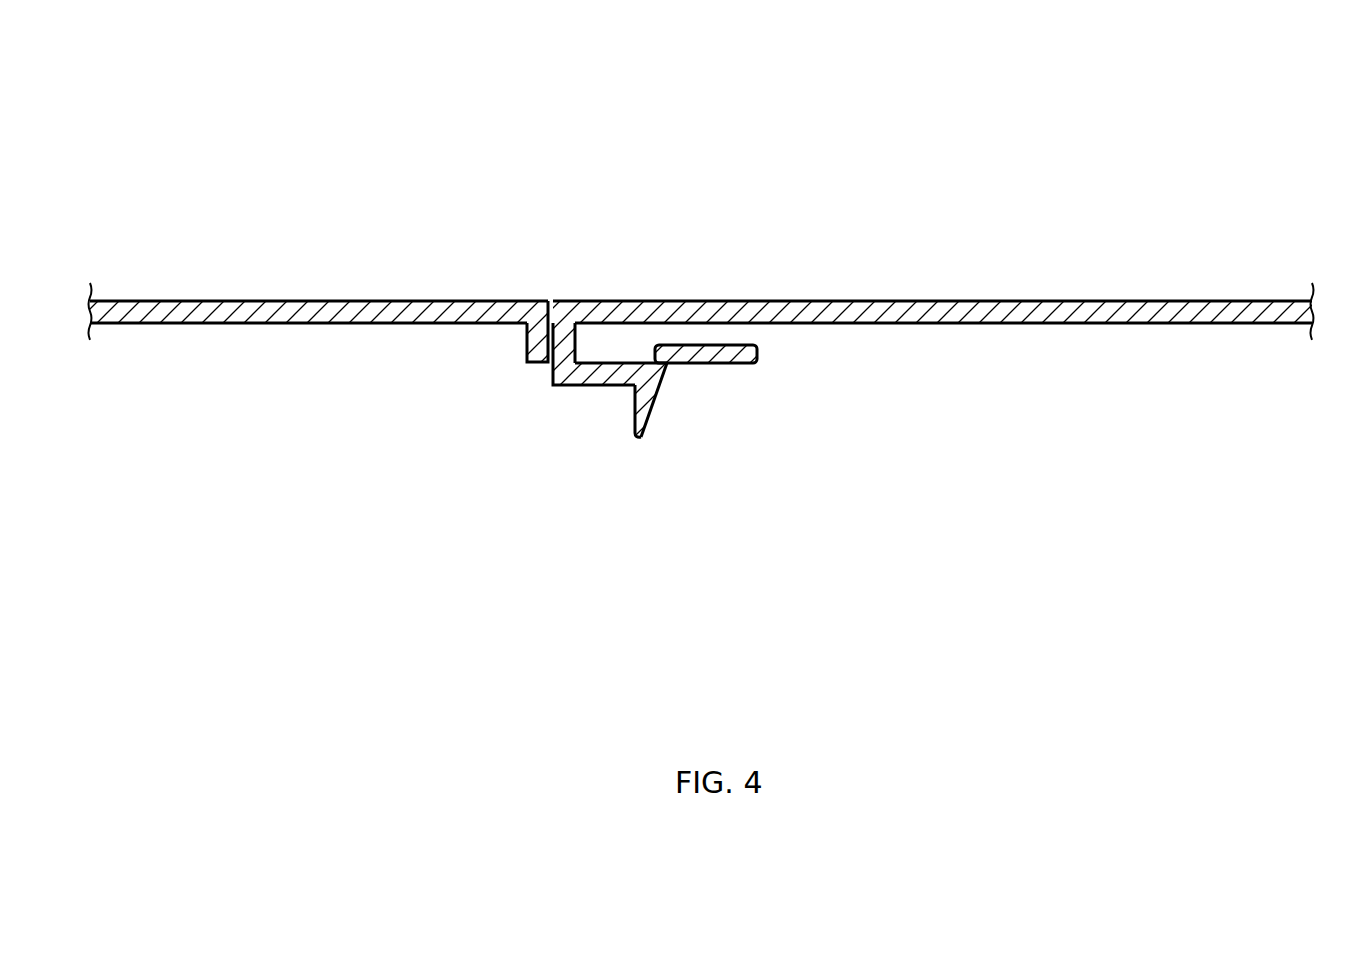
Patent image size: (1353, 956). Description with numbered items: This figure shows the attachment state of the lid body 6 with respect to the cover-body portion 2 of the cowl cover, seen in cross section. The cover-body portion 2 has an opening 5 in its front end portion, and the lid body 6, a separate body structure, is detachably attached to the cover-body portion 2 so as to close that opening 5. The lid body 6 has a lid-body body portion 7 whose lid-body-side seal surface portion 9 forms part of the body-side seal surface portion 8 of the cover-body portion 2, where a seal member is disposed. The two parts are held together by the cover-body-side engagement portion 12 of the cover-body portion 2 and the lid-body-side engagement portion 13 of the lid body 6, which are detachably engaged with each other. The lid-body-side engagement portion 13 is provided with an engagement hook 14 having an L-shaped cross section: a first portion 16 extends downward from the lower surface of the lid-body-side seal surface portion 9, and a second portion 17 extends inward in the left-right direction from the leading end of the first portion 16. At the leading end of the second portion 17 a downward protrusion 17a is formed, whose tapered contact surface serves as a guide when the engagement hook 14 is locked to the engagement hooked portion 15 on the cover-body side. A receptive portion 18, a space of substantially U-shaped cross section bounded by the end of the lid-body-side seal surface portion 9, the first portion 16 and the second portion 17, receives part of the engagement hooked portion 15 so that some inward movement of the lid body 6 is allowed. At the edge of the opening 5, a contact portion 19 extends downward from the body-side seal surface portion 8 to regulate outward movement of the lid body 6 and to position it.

The cover-body portion 2 is at (319, 295).
The opening 5 is at (932, 369).
The lid body 6 is at (920, 342).
The lid-body body portion 7 is at (932, 289).
The body-side seal surface portion 8 is at (197, 323).
The lid-body-side seal surface portion 9 is at (1190, 315).
The cover-body-side engagement portion 12 is at (675, 407).
The lid-body-side engagement portion 13 is at (629, 407).
The engagement hook 14 is at (667, 402).
The engagement hooked portion 15 is at (713, 352).
The first portion 16 is at (563, 358).
The second portion 17 is at (590, 385).
The downward protrusion 17a is at (661, 418).
The receptive portion 18 is at (622, 338).
The contact portion 19 is at (540, 345).